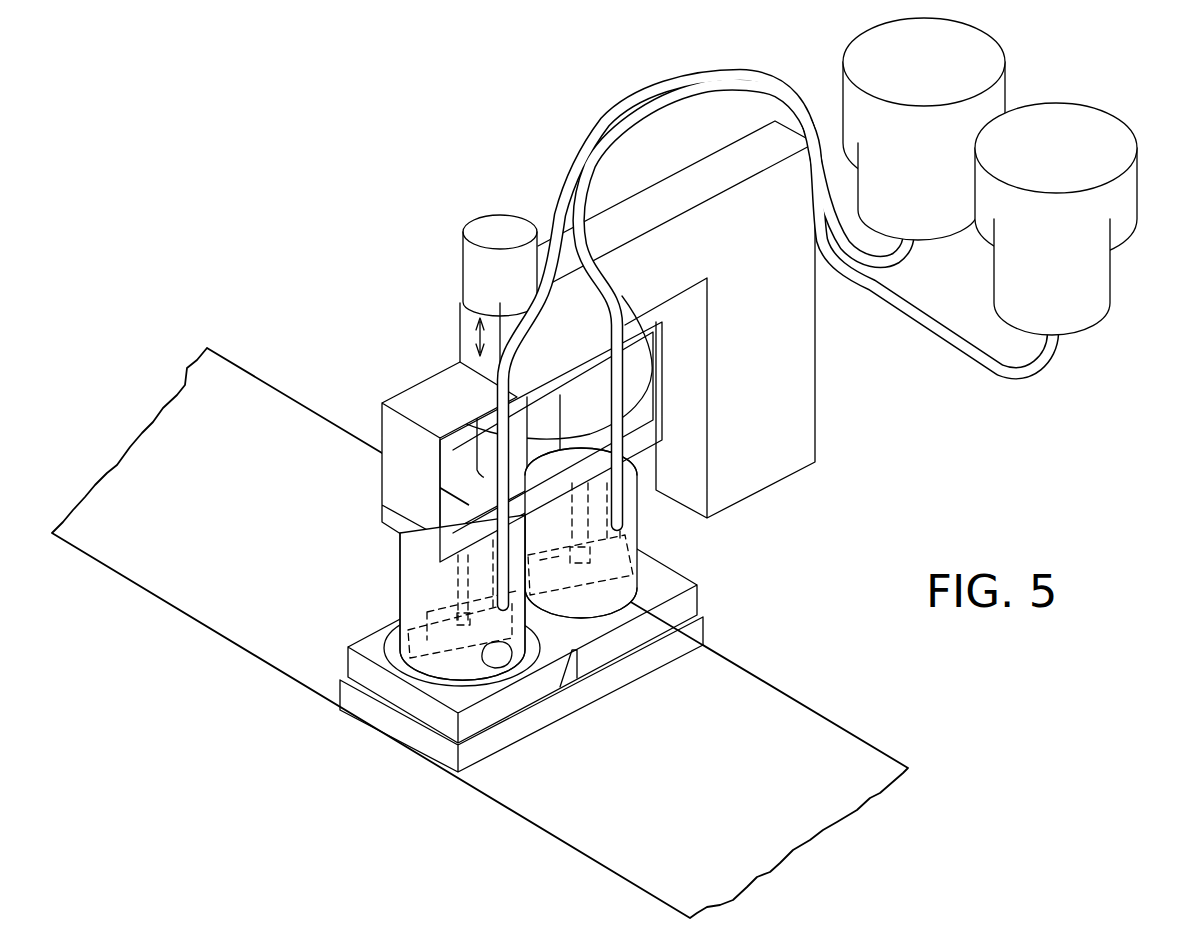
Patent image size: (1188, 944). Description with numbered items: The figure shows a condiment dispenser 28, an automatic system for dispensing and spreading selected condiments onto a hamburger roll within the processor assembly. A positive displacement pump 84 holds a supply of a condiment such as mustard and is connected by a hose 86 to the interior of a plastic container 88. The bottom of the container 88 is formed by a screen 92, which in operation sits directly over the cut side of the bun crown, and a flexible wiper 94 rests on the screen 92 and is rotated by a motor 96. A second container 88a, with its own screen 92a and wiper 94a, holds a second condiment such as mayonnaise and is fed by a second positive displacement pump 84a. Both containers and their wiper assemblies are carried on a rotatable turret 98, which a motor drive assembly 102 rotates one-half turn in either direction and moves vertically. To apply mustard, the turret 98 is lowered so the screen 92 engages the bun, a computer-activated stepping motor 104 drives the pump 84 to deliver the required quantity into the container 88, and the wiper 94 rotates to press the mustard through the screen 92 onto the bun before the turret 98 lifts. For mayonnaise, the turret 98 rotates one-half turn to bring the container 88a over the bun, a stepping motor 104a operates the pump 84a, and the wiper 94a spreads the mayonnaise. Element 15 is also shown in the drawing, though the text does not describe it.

The condiment dispenser 28 is at (378, 343).
The motor drive assembly 102 is at (480, 212).
The rotatable turret 98 is at (394, 400).
The motor 96 is at (560, 404).
The stepping motor 104a is at (850, 60).
The stepping motor 104 is at (1115, 138).
The positive displacement pump 84a is at (946, 242).
The positive displacement pump 84 is at (1092, 313).
The hose 86 is at (967, 341).
The second container 88a is at (630, 523).
The wiper 94a is at (620, 580).
The plastic container 88 is at (400, 603).
The flexible wiper 94 is at (464, 625).
The screen 92 is at (440, 662).
The screen 92a is at (570, 605).
The base plate 15 is at (525, 703).